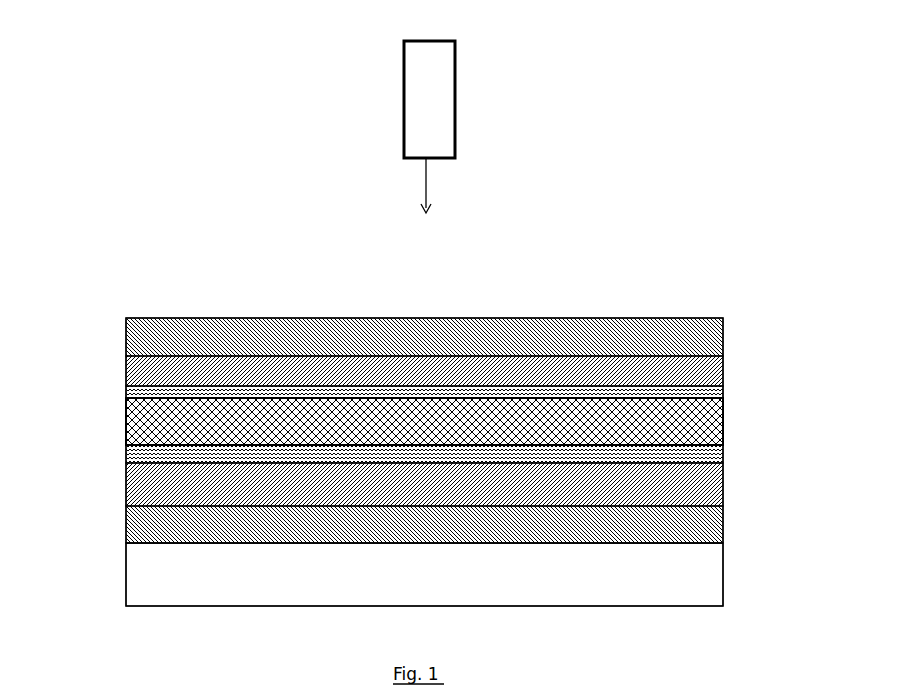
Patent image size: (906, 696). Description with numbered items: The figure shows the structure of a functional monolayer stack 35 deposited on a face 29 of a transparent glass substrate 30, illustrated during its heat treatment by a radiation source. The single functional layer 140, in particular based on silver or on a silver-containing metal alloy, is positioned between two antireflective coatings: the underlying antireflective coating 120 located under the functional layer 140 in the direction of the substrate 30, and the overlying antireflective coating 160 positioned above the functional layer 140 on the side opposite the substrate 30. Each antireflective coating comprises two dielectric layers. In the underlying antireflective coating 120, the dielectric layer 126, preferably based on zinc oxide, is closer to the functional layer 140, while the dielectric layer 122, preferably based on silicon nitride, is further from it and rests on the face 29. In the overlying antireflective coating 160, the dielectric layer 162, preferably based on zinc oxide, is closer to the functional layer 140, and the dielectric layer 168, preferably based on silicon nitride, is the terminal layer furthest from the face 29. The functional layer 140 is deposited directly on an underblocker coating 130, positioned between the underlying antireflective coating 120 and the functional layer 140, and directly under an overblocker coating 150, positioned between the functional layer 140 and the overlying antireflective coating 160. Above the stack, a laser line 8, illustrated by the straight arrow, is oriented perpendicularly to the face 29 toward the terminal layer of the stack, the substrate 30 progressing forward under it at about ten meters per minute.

The functional monolayer stack 35 is at (200, 185).
The laser line 8 is at (447, 107).
The transparent glass substrate 30 is at (428, 563).
The face of the substrate 29 is at (657, 536).
The underlying antireflective coating 120 is at (416, 504).
The dielectric layer 122 is at (128, 521).
The dielectric layer 126 is at (118, 483).
The underblocker coating 130 is at (118, 445).
The functional layer 140 is at (700, 407).
The overblocker coating 150 is at (138, 383).
The overlying antireflective coating 160 is at (413, 351).
The dielectric layer 162 is at (138, 370).
The dielectric layer 168 is at (138, 338).